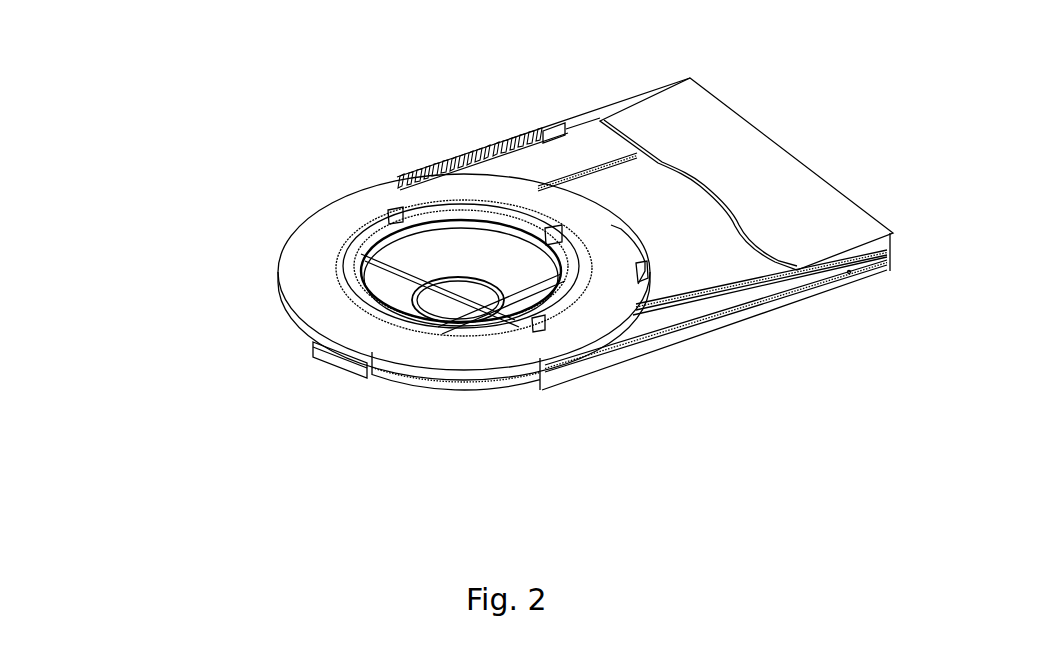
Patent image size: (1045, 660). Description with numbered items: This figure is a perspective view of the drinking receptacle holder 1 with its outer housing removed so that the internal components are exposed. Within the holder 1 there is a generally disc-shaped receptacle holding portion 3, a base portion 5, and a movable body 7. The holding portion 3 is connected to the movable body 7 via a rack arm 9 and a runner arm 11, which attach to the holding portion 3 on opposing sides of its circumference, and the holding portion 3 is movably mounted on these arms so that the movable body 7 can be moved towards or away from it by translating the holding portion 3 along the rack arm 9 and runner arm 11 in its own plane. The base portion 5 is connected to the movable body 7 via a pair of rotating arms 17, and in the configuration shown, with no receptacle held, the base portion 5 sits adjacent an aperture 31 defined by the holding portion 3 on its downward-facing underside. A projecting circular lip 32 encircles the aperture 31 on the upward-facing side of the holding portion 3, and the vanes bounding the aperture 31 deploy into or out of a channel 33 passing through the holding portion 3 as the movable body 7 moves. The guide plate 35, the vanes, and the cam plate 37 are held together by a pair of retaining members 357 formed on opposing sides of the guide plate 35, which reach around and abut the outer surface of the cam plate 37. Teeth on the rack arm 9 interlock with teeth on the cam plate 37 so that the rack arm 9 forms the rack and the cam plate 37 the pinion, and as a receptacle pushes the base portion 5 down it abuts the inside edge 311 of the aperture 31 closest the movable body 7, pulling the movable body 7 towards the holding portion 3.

The drinking receptacle holder 1 is at (223, 68).
The receptacle holding portion 3 is at (514, 275).
The base portion 5 is at (410, 270).
The movable body 7 is at (747, 145).
The rack arm 9 is at (493, 143).
The runner arm 11 is at (668, 336).
The rotating arms 17 is at (597, 167).
The aperture 31 is at (393, 297).
The inside edge 311 is at (530, 242).
The projecting circular lip 32 is at (358, 239).
The channel 33 is at (523, 300).
The guide plate 35 is at (307, 295).
The retaining members 357 is at (333, 357).
The cam plate 37 is at (493, 387).